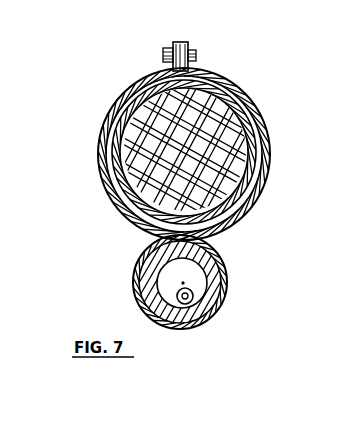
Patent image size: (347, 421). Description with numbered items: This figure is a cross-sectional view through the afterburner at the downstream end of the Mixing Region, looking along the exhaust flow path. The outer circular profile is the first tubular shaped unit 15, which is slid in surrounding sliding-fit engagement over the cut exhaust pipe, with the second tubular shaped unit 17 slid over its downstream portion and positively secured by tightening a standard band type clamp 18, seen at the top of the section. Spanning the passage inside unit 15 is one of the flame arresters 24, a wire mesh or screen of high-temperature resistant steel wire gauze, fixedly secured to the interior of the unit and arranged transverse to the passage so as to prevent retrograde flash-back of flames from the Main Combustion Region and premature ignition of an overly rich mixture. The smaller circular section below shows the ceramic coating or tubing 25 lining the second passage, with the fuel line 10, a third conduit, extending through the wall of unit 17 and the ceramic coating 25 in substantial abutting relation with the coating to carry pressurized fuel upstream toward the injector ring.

The fuel line 10 is at (180, 285).
The first tubular shaped unit 15 is at (128, 172).
The second tubular shaped unit 17 is at (121, 101).
The band type clamp 18 is at (205, 76).
The flame arresters 24 is at (268, 126).
The ceramic coating or tubing 25 is at (224, 268).